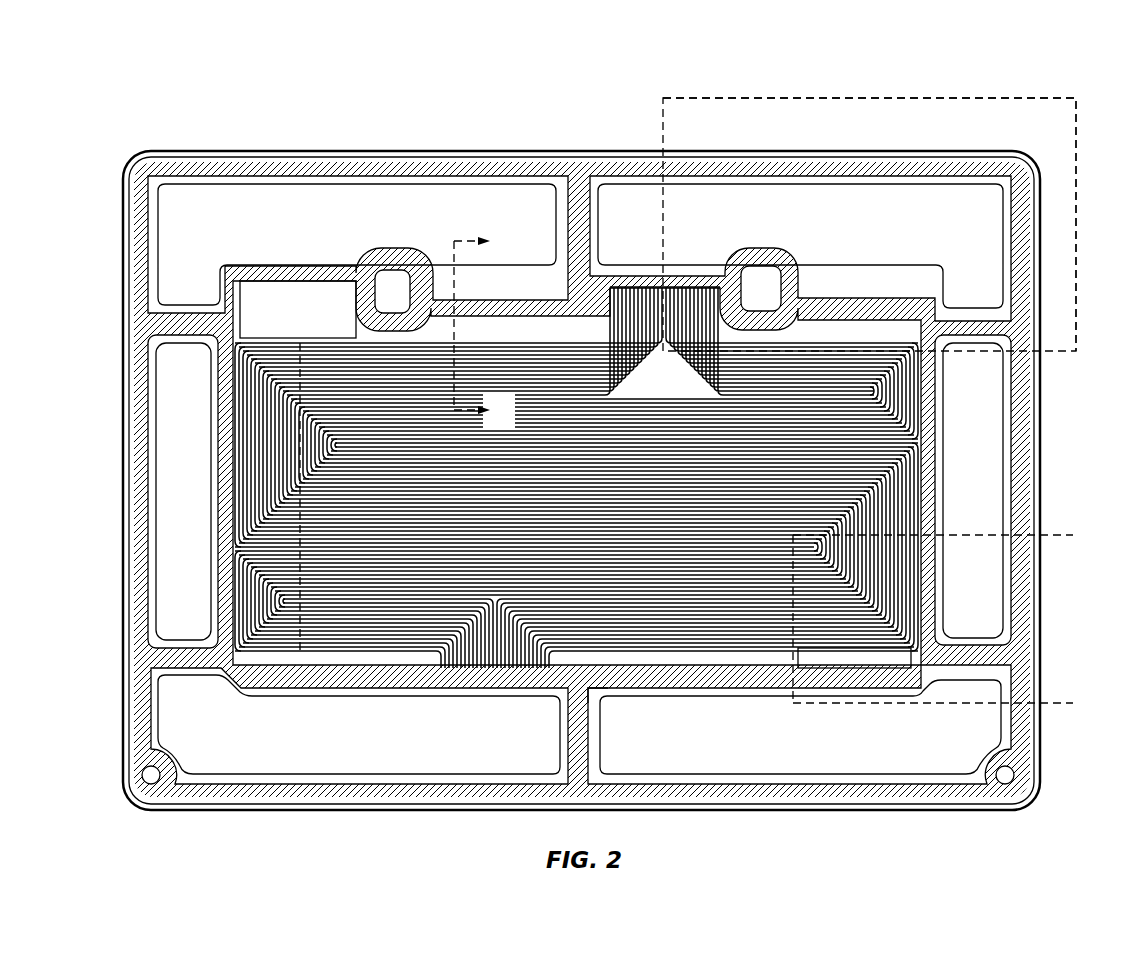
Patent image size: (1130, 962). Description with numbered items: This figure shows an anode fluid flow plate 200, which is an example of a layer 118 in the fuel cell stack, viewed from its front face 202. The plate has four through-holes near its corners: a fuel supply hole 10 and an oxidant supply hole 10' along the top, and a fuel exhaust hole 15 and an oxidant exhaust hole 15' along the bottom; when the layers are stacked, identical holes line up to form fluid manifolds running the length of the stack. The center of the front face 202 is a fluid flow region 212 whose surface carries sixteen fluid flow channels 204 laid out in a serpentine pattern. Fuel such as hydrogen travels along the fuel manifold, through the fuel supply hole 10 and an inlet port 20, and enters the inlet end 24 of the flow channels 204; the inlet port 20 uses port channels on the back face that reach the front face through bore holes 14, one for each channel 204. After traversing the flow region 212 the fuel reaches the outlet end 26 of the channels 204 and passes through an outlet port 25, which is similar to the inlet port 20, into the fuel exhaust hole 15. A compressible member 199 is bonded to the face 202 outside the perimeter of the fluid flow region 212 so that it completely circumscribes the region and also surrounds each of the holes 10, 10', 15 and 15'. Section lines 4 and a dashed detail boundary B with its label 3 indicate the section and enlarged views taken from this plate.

The anode fluid flow plate 200 is at (185, 61).
The layer 118 is at (118, 148).
The front face 202 is at (497, 150).
The fuel supply hole 10 is at (800, 248).
The oxidant supply hole 10' is at (358, 244).
The fuel exhaust hole 15 is at (355, 726).
The oxidant exhaust hole 15' is at (801, 724).
The bore hole 14 is at (669, 283).
The inlet port 20 is at (650, 277).
The inlet end 24 is at (737, 242).
The fluid flow channel 204 is at (230, 412).
The compressible member 199 is at (130, 515).
The fluid flow region 212 is at (295, 648).
The outlet port 25 is at (495, 662).
The outlet end 26 is at (582, 682).
The detail region of FIG. 3 is at (1067, 237).
The section line 4- 4 is at (698, 474).
The detail area B is at (1023, 90).